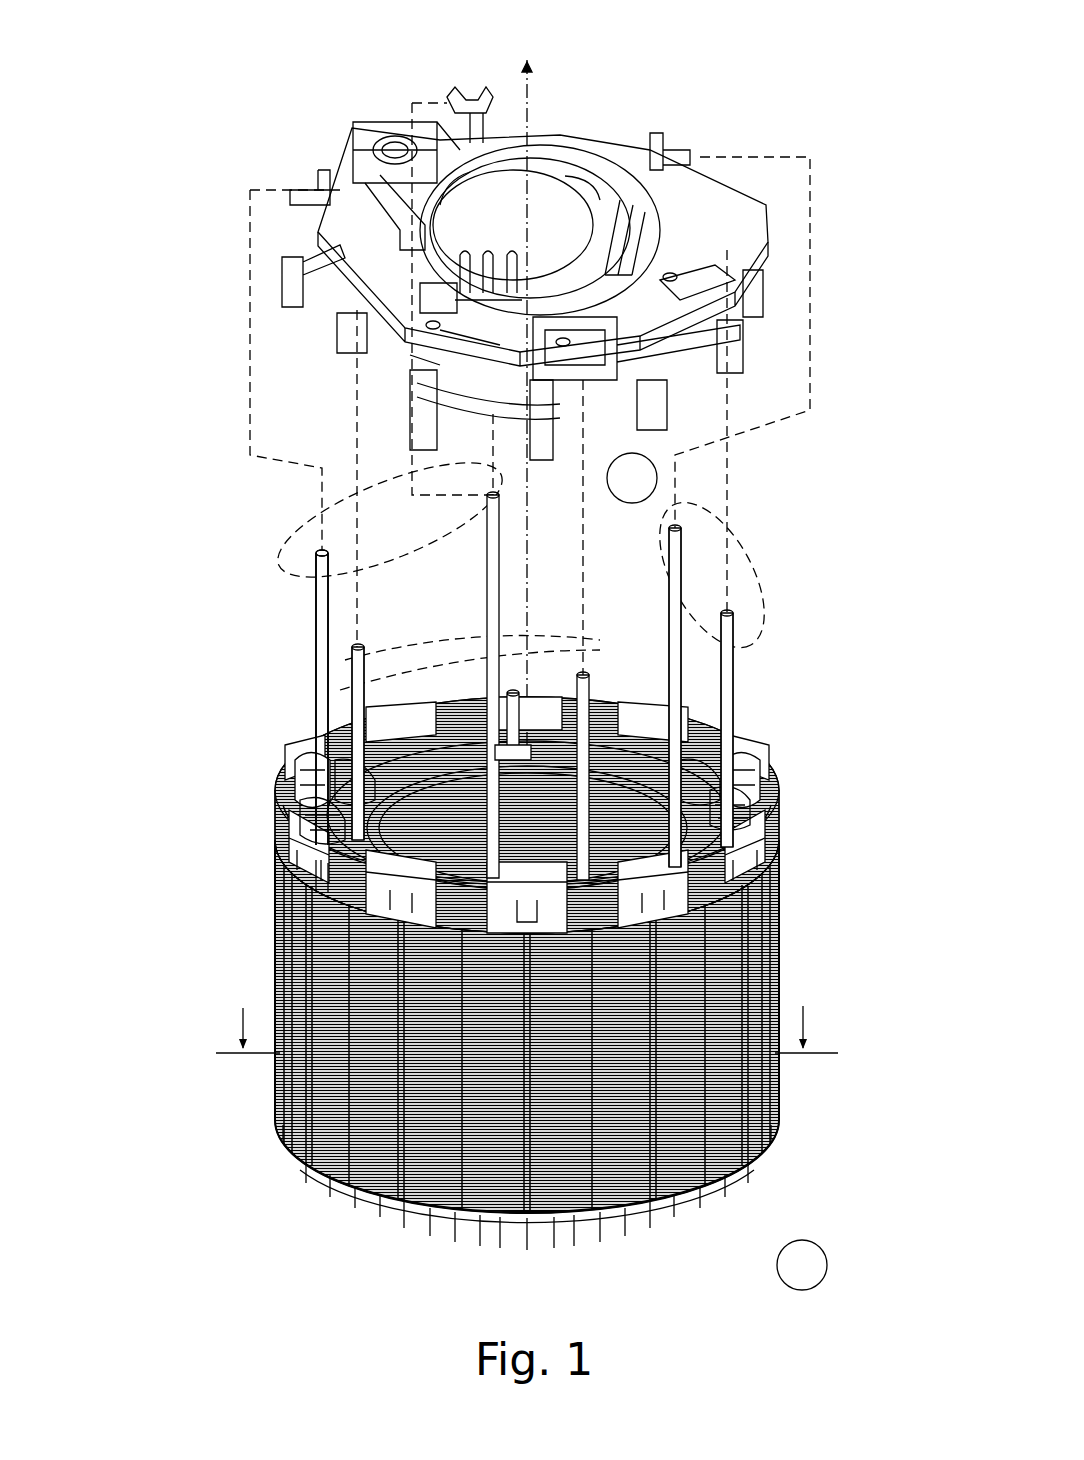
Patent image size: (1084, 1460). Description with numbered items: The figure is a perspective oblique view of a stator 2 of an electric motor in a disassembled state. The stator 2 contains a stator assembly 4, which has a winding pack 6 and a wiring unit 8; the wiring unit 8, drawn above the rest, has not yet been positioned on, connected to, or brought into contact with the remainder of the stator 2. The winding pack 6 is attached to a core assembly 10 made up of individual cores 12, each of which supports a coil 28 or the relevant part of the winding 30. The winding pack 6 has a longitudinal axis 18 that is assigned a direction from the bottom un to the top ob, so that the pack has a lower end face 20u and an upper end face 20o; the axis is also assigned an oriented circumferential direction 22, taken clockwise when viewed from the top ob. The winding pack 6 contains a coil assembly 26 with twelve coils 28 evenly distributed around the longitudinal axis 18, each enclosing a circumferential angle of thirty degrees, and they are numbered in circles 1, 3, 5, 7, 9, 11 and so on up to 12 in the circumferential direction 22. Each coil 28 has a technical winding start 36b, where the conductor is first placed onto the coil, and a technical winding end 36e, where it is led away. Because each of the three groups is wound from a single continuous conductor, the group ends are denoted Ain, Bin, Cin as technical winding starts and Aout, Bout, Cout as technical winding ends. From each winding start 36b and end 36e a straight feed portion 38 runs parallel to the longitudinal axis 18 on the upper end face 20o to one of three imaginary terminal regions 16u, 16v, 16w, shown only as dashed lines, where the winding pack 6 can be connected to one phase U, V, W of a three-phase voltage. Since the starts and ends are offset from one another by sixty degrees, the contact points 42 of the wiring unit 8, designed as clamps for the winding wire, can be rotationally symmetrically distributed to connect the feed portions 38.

The stator 2 is at (200, 96).
The stator assembly 4 is at (192, 160).
The winding pack 6 is at (192, 606).
The wiring unit 8 is at (240, 270).
The core assembly 10 is at (178, 780).
The longitudinal axis 18 is at (540, 66).
The contact points 42 is at (470, 92).
The terminal region 16u is at (280, 545).
The terminal region 16v is at (735, 540).
The terminal region 16w is at (350, 665).
The upper end face 20o is at (826, 490).
The lower end face 20u is at (733, 1240).
The circumferential direction 22 is at (762, 1208).
The coil assembly 26 is at (852, 716).
The coil 28 is at (770, 805).
The winding 30 is at (300, 830).
The winding start 36b is at (700, 742).
The winding end 36e is at (310, 757).
The feed portion 38 is at (733, 672).
The coil number 1 is at (400, 700).
The coil number 3 is at (620, 700).
The coil number 5 is at (748, 810).
The coil number 7 is at (665, 1220).
The coil number 9 is at (410, 1230).
The coil number 11 is at (308, 808).
The core 12 is at (330, 730).
The phase U is at (365, 210).
The phase V is at (700, 260).
The phase W is at (498, 275).
The technical winding end of group C Cout is at (322, 552).
The technical winding start of group C Cin is at (735, 620).
The technical winding start of group A Ain is at (486, 498).
The technical winding end of group A Aout is at (583, 674).
The technical winding start of group B Bin is at (676, 527).
The technical winding end of group B Bout is at (352, 646).
The top ob is at (632, 478).
The bottom un is at (802, 1265).